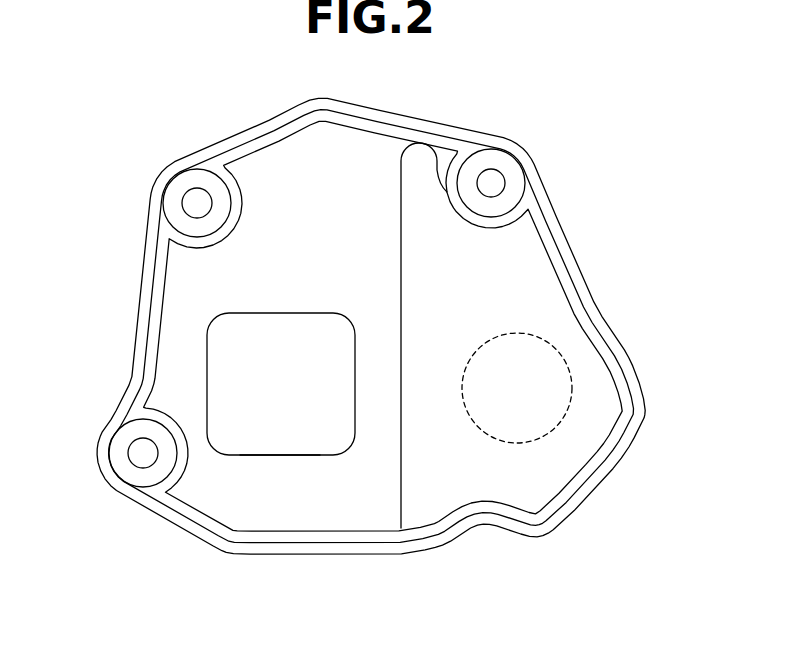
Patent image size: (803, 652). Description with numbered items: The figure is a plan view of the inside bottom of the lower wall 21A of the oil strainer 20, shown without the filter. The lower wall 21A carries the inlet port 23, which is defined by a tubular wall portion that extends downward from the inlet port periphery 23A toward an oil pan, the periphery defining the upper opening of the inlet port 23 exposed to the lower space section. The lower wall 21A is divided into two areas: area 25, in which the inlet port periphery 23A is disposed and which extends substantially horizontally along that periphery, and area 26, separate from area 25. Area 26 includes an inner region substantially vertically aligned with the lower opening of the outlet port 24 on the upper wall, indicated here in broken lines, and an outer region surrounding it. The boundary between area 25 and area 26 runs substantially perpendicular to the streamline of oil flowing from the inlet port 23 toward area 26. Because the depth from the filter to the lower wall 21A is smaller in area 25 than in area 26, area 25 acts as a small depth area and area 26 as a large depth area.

The oil strainer 20 is at (574, 201).
The lower wall 21A is at (582, 292).
The inlet port 23 is at (247, 360).
The inlet port periphery 23A is at (290, 457).
The outlet port 24 is at (562, 371).
The area 25 is at (197, 293).
The area 26 is at (538, 482).